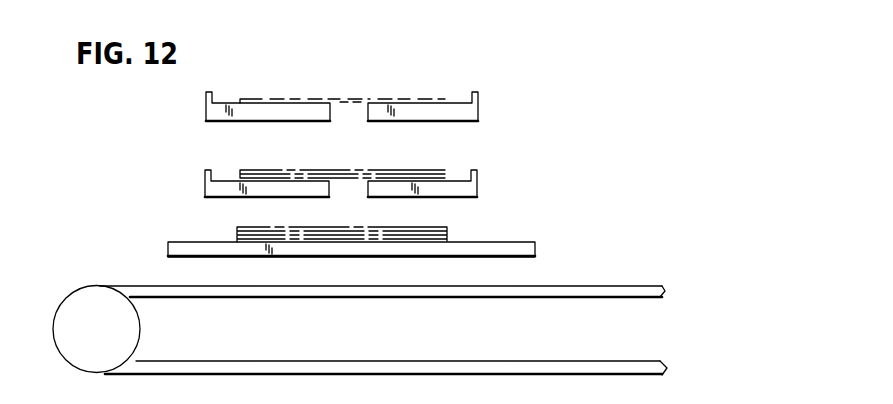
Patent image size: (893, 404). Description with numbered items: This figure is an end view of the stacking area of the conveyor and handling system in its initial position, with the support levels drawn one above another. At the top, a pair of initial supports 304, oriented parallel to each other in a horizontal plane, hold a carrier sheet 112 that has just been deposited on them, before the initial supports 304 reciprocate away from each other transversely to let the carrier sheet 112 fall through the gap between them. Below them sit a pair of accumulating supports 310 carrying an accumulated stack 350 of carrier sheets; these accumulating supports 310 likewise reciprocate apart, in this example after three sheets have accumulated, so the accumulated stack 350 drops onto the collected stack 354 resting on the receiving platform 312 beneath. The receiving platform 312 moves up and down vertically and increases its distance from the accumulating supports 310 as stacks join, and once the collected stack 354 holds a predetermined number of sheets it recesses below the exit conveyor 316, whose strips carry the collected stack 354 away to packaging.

The carrier sheet 112 is at (448, 98).
The initial supports 304 is at (208, 122).
The accumulating supports 310 is at (212, 199).
The accumulated stack 350 is at (455, 176).
The collected stack 354 is at (452, 228).
The receiving platform 312 is at (523, 243).
The exit conveyor 316 is at (636, 286).